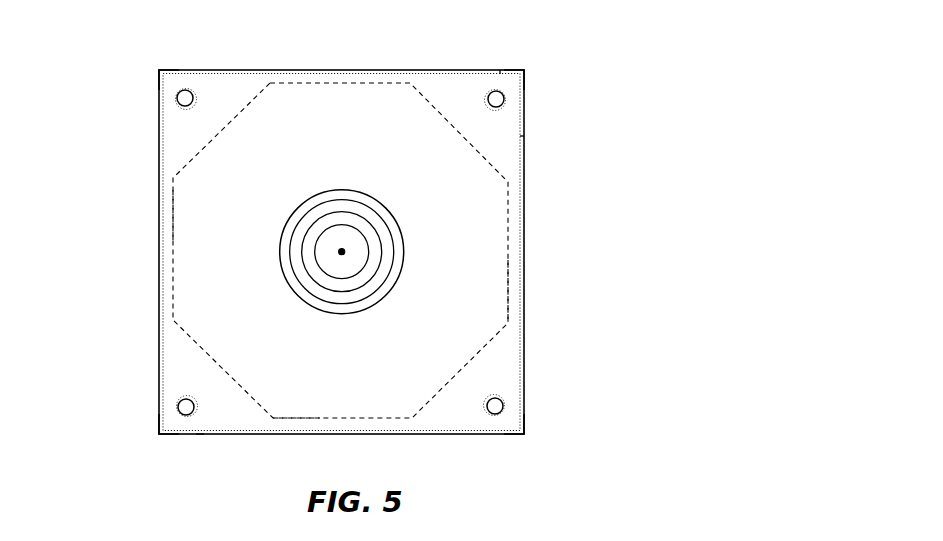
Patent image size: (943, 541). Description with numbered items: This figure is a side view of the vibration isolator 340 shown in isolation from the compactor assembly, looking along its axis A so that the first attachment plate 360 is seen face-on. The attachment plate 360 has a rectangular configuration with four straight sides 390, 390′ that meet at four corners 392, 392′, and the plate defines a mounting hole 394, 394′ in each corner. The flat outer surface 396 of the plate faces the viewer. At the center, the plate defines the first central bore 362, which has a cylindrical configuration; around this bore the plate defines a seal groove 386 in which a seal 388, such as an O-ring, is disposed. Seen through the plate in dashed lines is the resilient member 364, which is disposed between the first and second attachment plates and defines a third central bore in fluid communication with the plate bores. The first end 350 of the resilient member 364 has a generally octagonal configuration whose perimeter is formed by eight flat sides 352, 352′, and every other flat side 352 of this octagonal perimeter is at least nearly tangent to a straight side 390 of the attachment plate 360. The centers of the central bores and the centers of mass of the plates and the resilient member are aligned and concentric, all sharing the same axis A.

The straight side 390 is at (159, 137).
The straight side 390′ is at (500, 70).
The corner 392 is at (159, 70).
The corner 392′ is at (524, 70).
The mounting hole 394 is at (184, 98).
The mounting hole 394′ is at (496, 99).
The flat side 352 is at (402, 83).
The flat side 352′ is at (173, 203).
The first attachment plate 360 is at (210, 105).
The first end 350 is at (258, 97).
The resilient member 364 is at (213, 193).
The outer surface 396 is at (513, 170).
The vibration isolator 340 is at (284, 56).
The first central bore 362 is at (335, 240).
The seal 388 is at (388, 268).
The seal groove 386 is at (373, 295).
The axis A is at (340, 252).